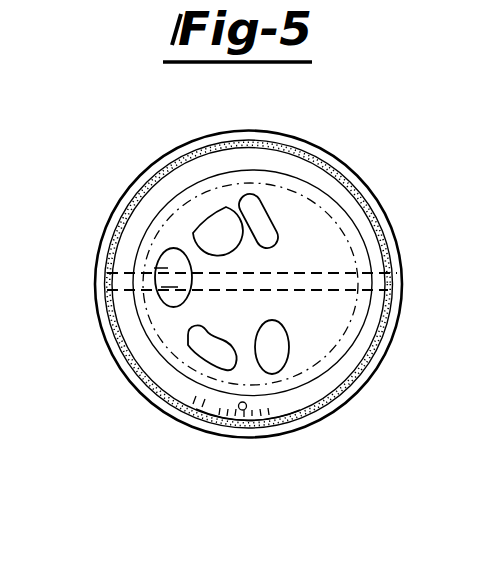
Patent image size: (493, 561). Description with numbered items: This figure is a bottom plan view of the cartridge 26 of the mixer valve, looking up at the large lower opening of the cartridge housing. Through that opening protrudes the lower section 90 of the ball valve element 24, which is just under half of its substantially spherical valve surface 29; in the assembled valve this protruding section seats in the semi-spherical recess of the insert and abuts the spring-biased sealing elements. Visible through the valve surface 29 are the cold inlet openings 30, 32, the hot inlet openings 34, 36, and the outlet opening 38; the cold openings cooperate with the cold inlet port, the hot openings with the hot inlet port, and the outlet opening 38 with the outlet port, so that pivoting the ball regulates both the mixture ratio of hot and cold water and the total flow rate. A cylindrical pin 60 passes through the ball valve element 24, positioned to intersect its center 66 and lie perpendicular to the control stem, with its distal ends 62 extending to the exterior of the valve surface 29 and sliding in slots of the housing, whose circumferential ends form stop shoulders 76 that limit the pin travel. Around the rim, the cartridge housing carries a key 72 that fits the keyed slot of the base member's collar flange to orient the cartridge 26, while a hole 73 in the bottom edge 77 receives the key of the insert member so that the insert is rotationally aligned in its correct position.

The cartridge 26 is at (299, 128).
The stop shoulders 76 is at (173, 200).
The distal ends 62 is at (95, 223).
The ball valve element 24 is at (362, 189).
The spherical valve surface 29 is at (287, 243).
The lower section 90 is at (337, 267).
The cold inlet opening 32 is at (266, 236).
The cold inlet opening 30 is at (213, 240).
The outlet opening 38 is at (145, 312).
The cylindrical pin 60 is at (158, 298).
The center 66 is at (250, 288).
The hot inlet opening 34 is at (218, 350).
The hot inlet opening 36 is at (278, 357).
The hole 73 is at (252, 412).
The key 72 is at (244, 434).
The bottom edge 77 is at (200, 405).